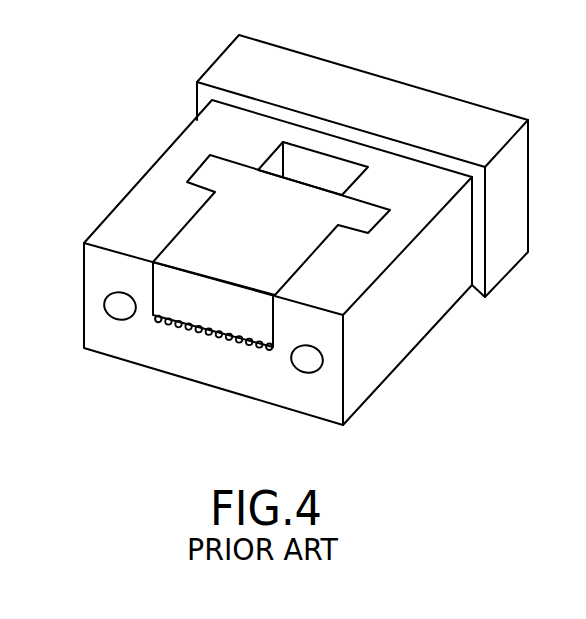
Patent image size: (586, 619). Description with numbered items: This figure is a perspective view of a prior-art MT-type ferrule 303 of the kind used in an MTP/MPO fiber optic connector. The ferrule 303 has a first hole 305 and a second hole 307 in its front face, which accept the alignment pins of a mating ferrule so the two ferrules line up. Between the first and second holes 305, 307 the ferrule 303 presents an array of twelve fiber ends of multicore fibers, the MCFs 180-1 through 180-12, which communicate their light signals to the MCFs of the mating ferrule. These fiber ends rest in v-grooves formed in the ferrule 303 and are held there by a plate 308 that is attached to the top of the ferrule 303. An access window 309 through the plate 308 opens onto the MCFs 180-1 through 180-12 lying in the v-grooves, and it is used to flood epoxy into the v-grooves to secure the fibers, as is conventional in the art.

The MT-type ferrule 303 is at (410, 321).
The first hole 305 is at (117, 318).
The second hole 307 is at (318, 365).
The plate 308 is at (205, 243).
The access window 309 is at (329, 170).
The MCF 180-1 is at (155, 318).
The MCF 180-12 is at (267, 352).